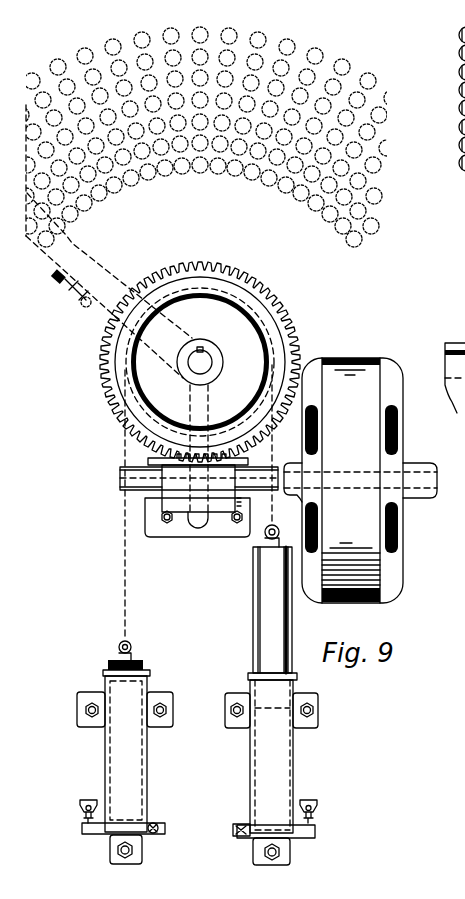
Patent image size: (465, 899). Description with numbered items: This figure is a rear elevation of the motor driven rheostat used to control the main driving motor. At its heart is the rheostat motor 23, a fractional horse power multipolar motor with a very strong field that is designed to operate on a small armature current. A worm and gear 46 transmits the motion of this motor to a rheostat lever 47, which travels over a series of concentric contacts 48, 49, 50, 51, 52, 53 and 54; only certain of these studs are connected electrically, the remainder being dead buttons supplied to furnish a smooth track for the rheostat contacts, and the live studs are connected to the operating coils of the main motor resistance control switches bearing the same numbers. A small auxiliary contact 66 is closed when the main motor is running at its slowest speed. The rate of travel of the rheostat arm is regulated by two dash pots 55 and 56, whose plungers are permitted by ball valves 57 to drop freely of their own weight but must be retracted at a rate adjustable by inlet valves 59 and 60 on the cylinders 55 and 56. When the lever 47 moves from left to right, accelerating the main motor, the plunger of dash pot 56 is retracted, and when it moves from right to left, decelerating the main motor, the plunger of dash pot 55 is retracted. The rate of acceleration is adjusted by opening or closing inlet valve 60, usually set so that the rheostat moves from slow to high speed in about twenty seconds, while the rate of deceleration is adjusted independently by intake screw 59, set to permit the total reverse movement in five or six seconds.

The rheostat motor 23 is at (370, 480).
The worm and gear 46 is at (178, 488).
The rheostat lever 47 is at (245, 241).
The contacts 48 is at (218, 211).
The contacts 49 is at (223, 188).
The contacts 50 is at (223, 164).
The contacts 51 is at (225, 137).
The contacts 52 is at (228, 114).
The contacts 53 is at (223, 90).
The contacts 54 is at (229, 69).
The dash pot 55 is at (281, 615).
The dash pot 56 is at (134, 617).
The ball valves 57 is at (195, 809).
The inlet valve 59 is at (227, 829).
The inlet valve 60 is at (174, 843).
The auxiliary contact 66 is at (59, 294).